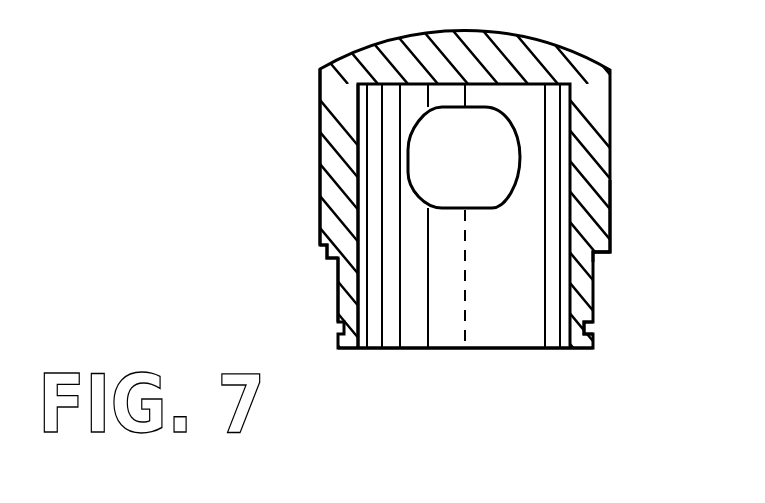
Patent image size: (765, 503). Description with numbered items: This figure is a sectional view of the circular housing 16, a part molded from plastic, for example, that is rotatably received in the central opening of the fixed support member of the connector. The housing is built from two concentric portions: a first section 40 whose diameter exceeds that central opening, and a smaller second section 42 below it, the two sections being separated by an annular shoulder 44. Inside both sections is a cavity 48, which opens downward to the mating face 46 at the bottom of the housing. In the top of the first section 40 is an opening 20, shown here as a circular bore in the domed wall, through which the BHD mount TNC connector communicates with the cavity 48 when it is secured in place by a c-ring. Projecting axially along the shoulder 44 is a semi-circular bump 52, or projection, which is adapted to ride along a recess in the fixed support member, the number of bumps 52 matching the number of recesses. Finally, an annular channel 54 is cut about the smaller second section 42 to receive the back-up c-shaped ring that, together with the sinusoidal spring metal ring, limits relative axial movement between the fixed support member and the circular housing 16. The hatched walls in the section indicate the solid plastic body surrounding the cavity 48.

The circular housing 16 is at (266, 49).
The opening 20 is at (494, 205).
The first section 40 is at (318, 127).
The second section 42 is at (338, 296).
The annular shoulder 44 is at (612, 253).
The mating face 46 is at (345, 350).
The cavity 48 is at (578, 271).
The semi-circular bump 52 is at (326, 252).
The annular channel 54 is at (592, 330).